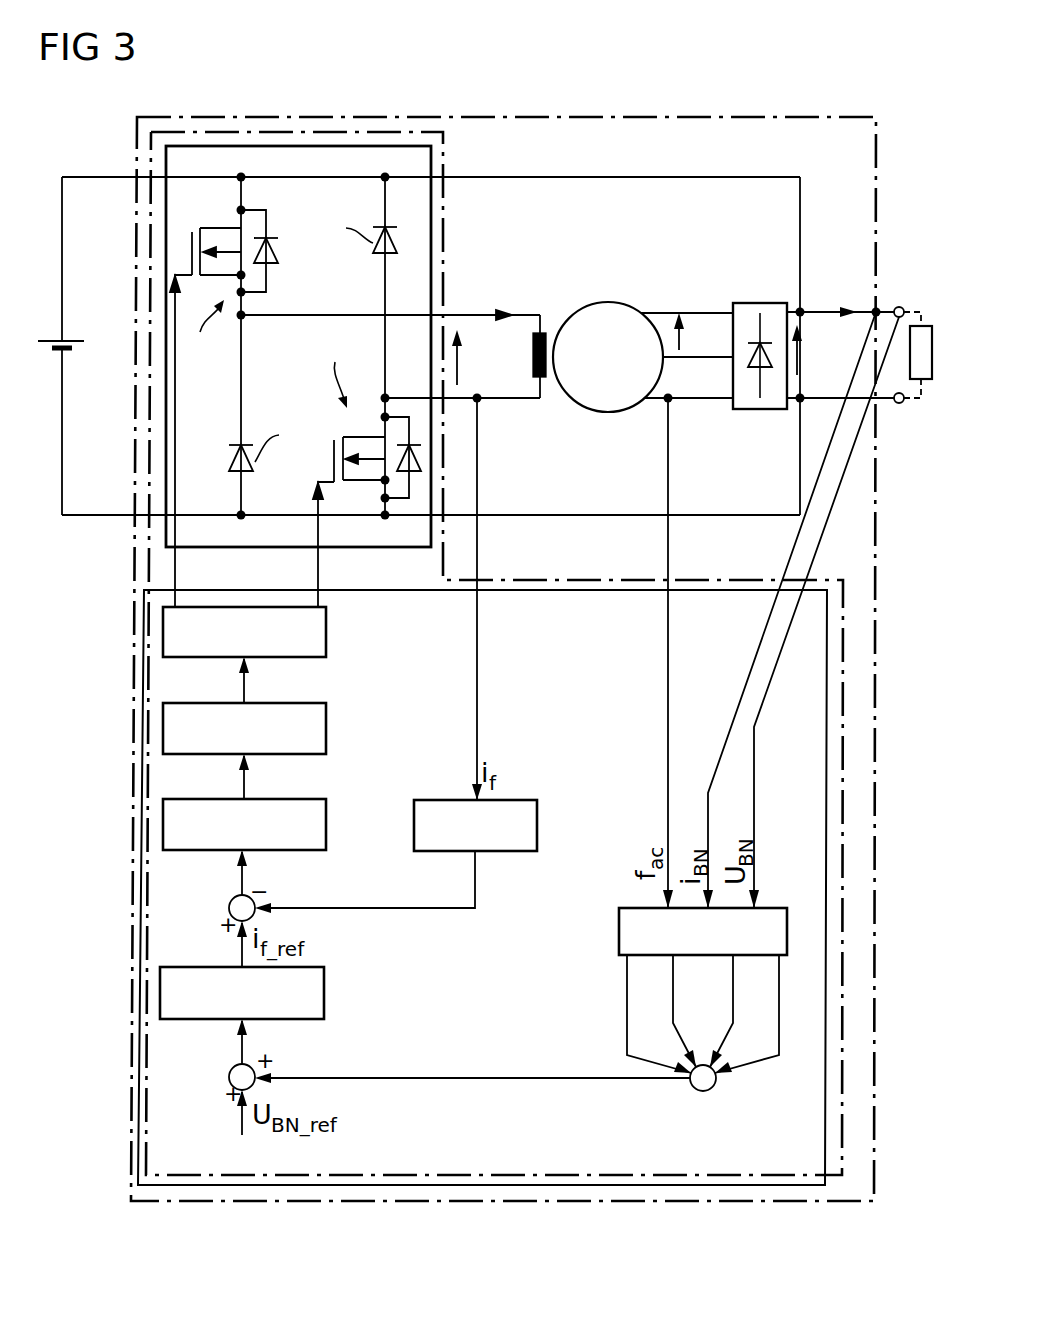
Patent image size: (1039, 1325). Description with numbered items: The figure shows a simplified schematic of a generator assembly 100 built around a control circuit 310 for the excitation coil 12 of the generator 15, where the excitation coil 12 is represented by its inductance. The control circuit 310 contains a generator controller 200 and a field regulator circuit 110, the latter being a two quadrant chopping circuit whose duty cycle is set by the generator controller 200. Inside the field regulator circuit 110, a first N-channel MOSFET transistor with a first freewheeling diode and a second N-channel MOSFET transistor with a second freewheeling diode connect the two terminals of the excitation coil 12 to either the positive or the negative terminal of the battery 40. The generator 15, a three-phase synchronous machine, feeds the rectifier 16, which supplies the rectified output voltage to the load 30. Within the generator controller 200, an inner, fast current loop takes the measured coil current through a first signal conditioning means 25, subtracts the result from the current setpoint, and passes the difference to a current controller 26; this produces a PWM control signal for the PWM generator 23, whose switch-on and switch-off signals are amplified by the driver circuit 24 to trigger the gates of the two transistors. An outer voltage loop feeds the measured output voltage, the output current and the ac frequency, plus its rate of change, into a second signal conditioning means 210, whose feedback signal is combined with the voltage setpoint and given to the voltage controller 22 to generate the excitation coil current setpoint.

The generator assembly 100 is at (580, 118).
The field regulator circuit 110 is at (290, 146).
The excitation coil 12 is at (540, 333).
The generator 15 is at (606, 302).
The rectifier 16 is at (760, 409).
The load 30 is at (921, 398).
The battery 40 is at (74, 352).
The generator controller 200 is at (575, 590).
The second signal conditioning means 210 is at (619, 934).
The voltage controller 22 is at (324, 992).
The PWM generator 23 is at (326, 727).
The driver circuit 24 is at (326, 630).
The first signal conditioning means 25 is at (537, 827).
The current controller 26 is at (326, 822).
The control circuit 310 is at (567, 1186).